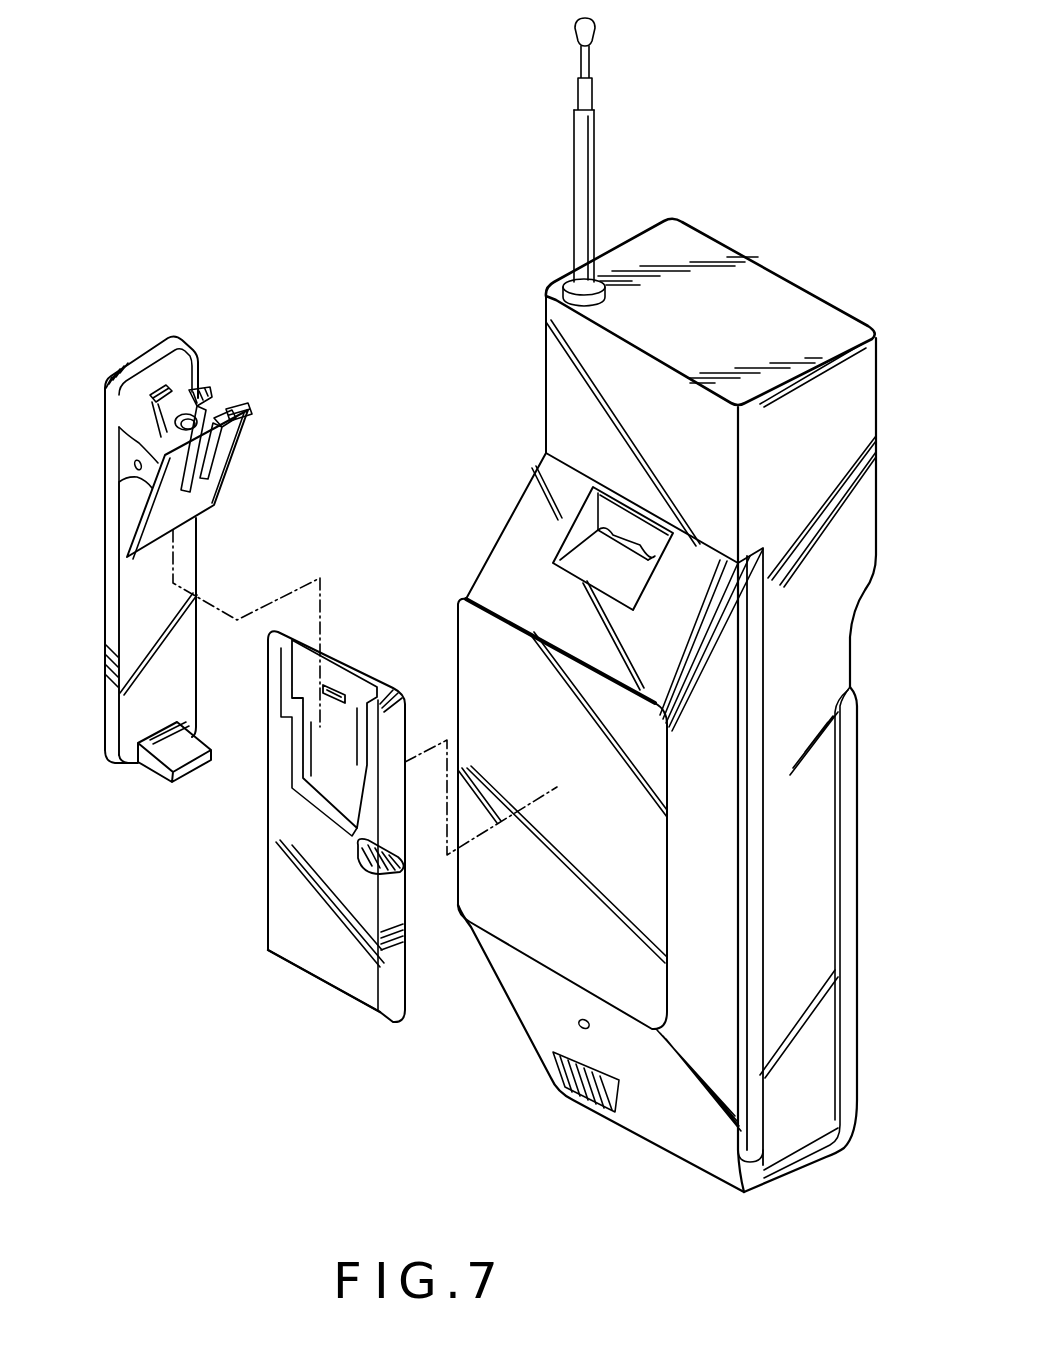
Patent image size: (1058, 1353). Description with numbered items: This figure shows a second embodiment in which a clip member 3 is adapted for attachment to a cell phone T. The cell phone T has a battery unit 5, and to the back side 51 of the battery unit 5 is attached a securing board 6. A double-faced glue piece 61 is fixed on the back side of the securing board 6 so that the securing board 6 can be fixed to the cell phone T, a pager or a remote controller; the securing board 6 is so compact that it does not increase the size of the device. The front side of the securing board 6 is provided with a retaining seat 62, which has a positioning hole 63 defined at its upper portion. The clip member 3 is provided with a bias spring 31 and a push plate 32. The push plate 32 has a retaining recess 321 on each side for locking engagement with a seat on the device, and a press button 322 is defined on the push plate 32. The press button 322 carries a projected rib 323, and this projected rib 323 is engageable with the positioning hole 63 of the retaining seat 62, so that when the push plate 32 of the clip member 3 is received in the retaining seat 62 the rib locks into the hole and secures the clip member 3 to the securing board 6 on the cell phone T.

The cell phone T is at (759, 300).
The battery unit 5 is at (510, 527).
The back side 51 is at (465, 693).
The clip member 3 is at (118, 617).
The bias spring 31 is at (150, 392).
The push plate 32 is at (195, 492).
The retaining recess 321 is at (247, 405).
The press button 322 is at (228, 424).
The projected rib 323 is at (214, 460).
The securing board 6 is at (287, 880).
The double-faced glue piece 61 is at (398, 862).
The retaining seat 62 is at (320, 752).
The positioning hole 63 is at (338, 688).